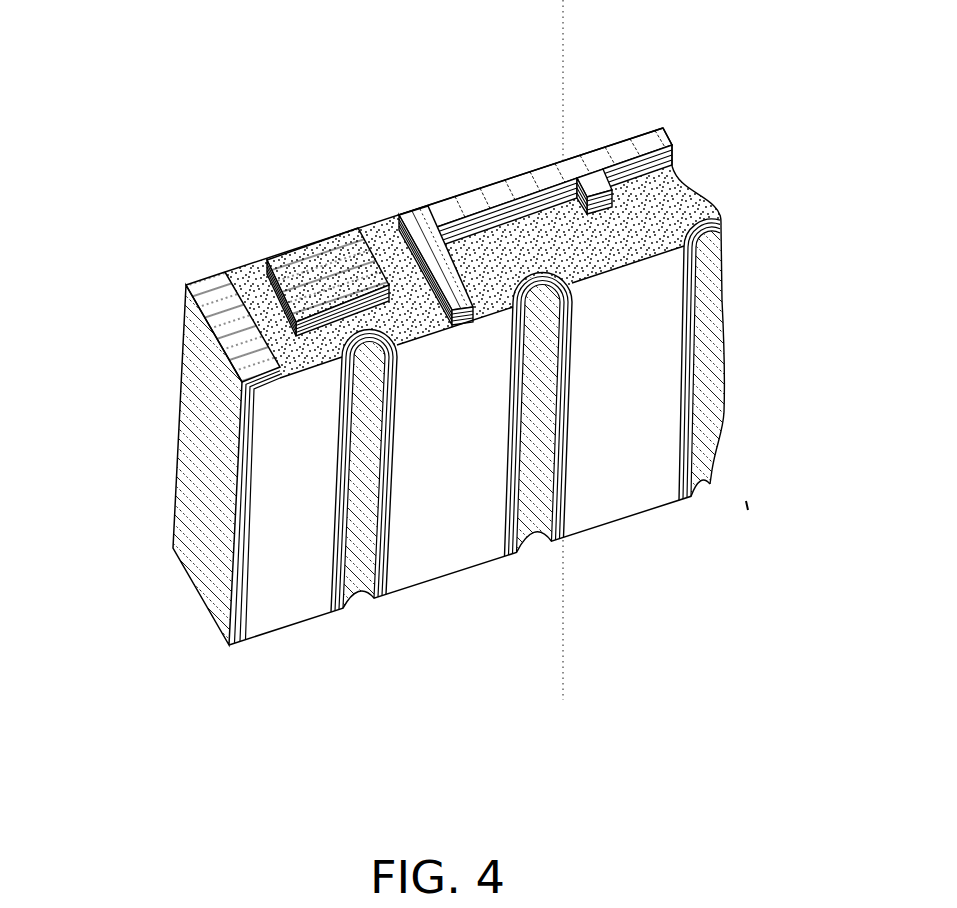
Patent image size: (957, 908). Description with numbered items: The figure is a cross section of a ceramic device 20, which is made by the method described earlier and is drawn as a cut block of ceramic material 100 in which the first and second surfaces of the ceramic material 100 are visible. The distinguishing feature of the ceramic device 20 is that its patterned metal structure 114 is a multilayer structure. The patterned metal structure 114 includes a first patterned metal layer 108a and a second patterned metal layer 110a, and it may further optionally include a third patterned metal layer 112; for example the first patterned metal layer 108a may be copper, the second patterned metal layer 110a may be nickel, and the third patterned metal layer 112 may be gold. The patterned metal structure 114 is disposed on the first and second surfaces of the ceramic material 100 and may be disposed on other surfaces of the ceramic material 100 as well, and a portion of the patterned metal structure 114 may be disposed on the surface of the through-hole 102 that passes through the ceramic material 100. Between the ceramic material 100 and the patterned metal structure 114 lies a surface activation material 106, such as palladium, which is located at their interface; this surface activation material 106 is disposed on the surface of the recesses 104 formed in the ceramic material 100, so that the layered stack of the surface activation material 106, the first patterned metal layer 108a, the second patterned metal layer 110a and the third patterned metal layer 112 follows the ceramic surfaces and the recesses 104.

The ceramic device 20 is at (410, 382).
The ceramic material 100 is at (383, 247).
The through-hole 102 is at (374, 369).
The recesses 104 is at (248, 282).
The surface activation material 106 is at (234, 451).
The first patterned metal layer 108a is at (247, 417).
The second patterned metal layer 110a is at (243, 392).
The third patterned metal layer 112 is at (235, 343).
The patterned metal structure 114 is at (386, 492).